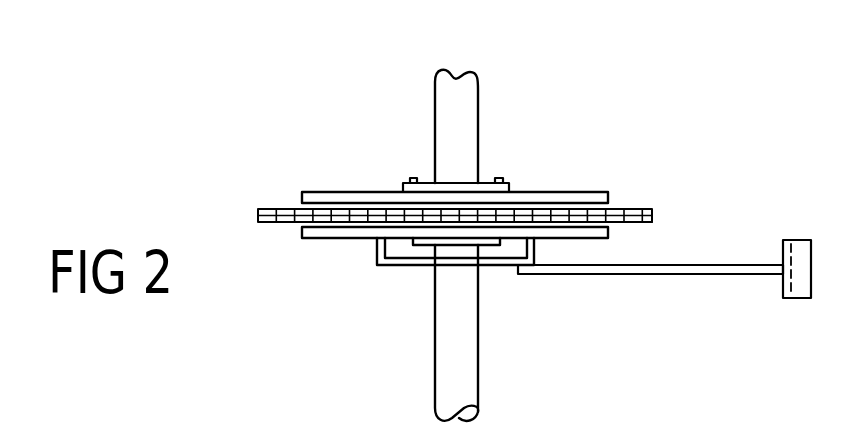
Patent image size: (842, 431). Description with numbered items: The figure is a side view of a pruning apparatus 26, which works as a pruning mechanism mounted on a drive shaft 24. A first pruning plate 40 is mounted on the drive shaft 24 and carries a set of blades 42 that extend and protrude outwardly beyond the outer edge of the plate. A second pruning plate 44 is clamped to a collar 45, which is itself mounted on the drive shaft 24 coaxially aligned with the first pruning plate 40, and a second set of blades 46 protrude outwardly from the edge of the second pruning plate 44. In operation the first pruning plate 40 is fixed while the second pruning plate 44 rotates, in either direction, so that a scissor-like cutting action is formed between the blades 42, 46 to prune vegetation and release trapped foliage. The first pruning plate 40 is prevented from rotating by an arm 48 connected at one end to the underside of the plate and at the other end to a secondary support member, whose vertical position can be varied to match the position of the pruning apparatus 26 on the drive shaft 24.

The drive shaft 24 is at (450, 117).
The pruning apparatus 26 is at (640, 132).
The first pruning plate 40 is at (335, 236).
The blades 42 is at (625, 221).
The second pruning plate 44 is at (355, 198).
The collar 45 is at (483, 183).
The second set of blades 46 is at (652, 209).
The arm 48 is at (615, 274).